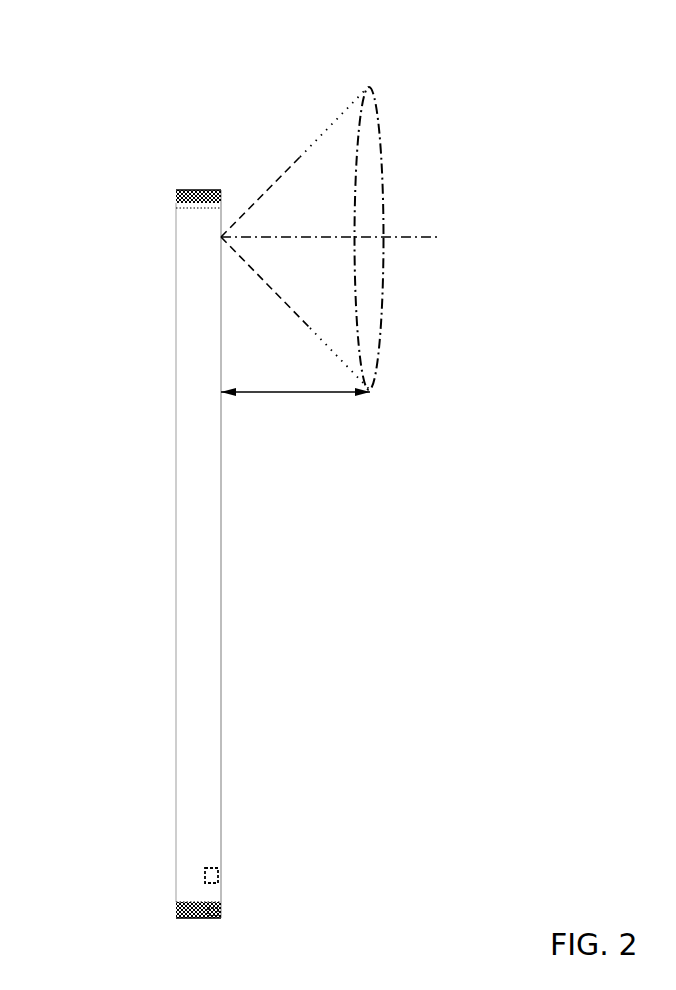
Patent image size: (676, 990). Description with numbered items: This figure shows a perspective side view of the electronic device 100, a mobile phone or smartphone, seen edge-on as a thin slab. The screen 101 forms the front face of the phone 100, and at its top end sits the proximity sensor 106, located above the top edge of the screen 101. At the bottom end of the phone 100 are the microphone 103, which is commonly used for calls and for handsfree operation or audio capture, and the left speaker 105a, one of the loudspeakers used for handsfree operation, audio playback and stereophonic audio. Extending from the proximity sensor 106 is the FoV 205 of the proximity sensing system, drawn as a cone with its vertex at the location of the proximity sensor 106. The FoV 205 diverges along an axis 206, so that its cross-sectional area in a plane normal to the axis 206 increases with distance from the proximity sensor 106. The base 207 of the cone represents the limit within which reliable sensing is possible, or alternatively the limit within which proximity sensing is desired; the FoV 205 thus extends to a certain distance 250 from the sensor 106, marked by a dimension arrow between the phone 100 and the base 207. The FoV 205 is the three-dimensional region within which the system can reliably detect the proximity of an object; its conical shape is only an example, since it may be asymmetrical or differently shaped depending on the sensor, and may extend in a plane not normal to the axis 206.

The electronic device 100 is at (182, 650).
The screen 101 is at (218, 632).
The microphone 103 is at (218, 912).
The left speaker 105a is at (218, 877).
The proximity sensor 106 is at (222, 237).
The FoV 205 is at (303, 215).
The axis 206 is at (422, 237).
The base of the cone 207 is at (381, 124).
The distance 250 is at (297, 393).